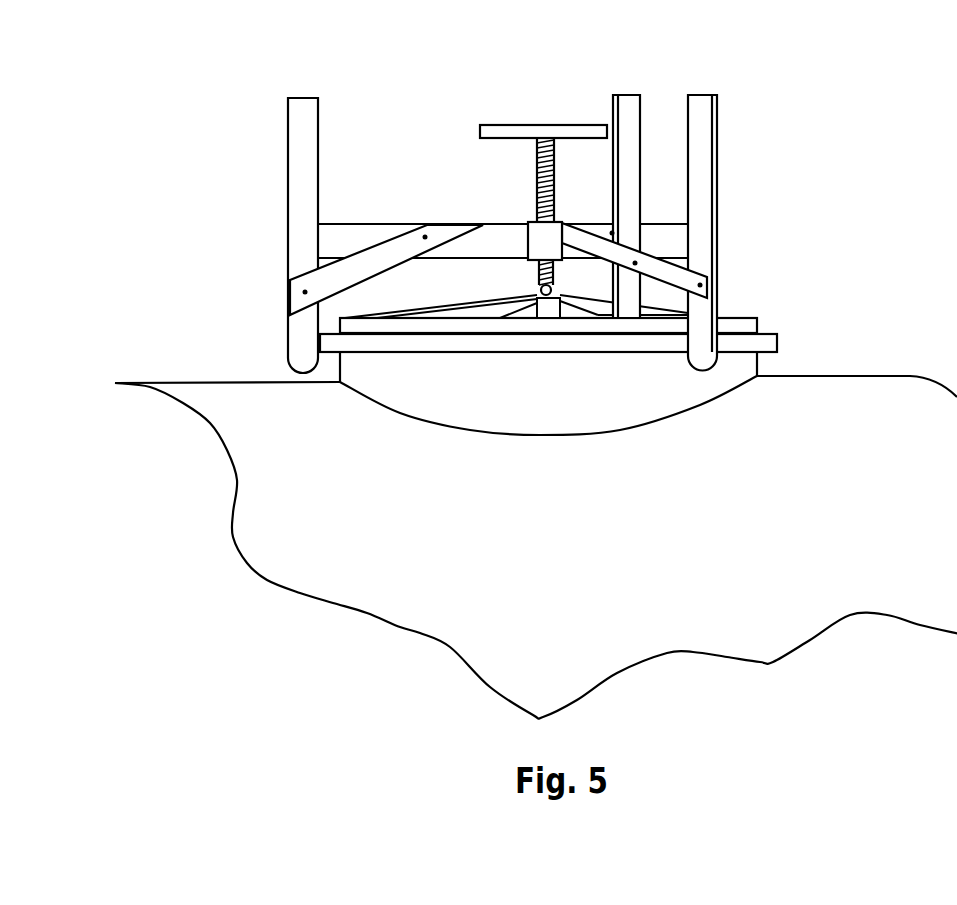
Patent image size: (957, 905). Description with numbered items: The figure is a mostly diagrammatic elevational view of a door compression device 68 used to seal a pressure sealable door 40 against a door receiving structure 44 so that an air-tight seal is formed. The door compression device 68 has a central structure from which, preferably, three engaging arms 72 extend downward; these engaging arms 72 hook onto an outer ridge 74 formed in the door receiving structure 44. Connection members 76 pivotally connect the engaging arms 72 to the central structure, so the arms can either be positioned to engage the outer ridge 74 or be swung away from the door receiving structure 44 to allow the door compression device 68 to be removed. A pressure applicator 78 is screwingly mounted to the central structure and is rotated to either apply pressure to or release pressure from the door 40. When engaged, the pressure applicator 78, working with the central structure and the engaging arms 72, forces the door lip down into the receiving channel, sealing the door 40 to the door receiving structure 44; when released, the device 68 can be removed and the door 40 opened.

The door compression device 68 is at (545, 193).
The engaging arms 72 is at (286, 141).
The outer ridge 74 is at (780, 341).
The connection members 76 is at (288, 302).
The pressure applicator 78 is at (418, 82).
The pressure sealable door 40 is at (758, 323).
The door receiving structure 44 is at (548, 393).